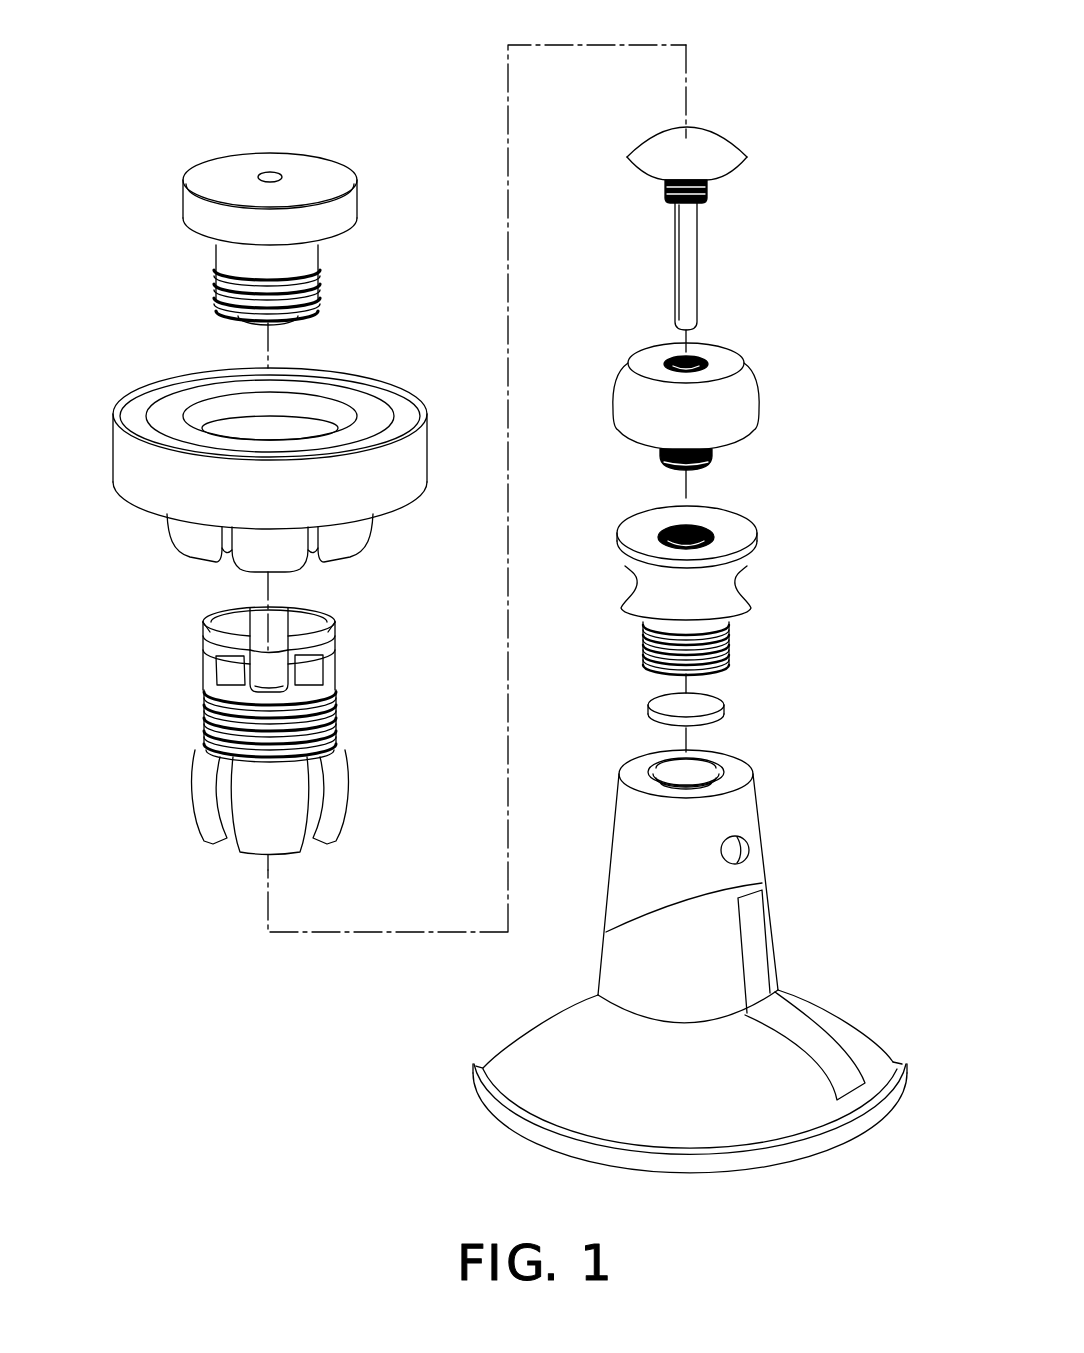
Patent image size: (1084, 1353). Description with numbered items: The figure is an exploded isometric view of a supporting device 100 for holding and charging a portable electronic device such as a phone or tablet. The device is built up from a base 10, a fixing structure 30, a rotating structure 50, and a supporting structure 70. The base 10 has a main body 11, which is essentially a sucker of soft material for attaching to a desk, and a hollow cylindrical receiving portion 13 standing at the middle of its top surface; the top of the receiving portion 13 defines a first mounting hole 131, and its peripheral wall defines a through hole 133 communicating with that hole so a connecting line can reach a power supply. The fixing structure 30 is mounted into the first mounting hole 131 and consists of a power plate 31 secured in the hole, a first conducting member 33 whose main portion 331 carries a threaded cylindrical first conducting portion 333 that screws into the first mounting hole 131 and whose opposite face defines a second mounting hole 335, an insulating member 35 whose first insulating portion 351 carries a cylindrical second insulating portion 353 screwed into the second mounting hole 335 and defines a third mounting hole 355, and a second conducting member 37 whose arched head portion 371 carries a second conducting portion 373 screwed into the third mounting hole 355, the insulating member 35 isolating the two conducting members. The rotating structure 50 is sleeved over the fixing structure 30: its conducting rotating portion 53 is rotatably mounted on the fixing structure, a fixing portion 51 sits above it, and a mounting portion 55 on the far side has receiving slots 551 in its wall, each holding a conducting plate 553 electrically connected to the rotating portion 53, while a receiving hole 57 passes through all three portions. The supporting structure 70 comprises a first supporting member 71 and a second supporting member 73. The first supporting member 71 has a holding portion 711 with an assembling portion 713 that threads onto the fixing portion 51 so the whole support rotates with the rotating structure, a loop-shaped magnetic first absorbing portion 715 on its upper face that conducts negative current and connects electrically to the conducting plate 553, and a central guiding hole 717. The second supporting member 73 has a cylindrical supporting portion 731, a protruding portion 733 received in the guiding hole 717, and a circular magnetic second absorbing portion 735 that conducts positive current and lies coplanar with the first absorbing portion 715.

The supporting device 100 is at (402, 40).
The base 10 is at (845, 887).
The main body 11 is at (810, 1002).
The receiving portion 13 is at (720, 950).
The first mounting hole 131 is at (725, 772).
The through hole 133 is at (750, 850).
The fixing structure 30 is at (874, 240).
The power plate 31 is at (700, 703).
The first conducting member 33 is at (765, 522).
The main portion 331 is at (730, 545).
The first conducting portion 333 is at (645, 640).
The second mounting hole 335 is at (700, 528).
The insulating member 35 is at (767, 386).
The first insulating portion 351 is at (640, 410).
The second insulating portion 353 is at (668, 462).
The third mounting hole 355 is at (670, 358).
The second conducting member 37 is at (707, 240).
The head portion 371 is at (718, 140).
The second conducting portion 373 is at (680, 238).
The rotating structure 50 is at (194, 731).
The fixing portion 51 is at (217, 692).
The rotating portion 53 is at (200, 810).
The mounting portion 55 is at (212, 650).
The receiving slot 551 is at (330, 651).
The conducting plate 553 is at (318, 672).
The receiving hole 57 is at (258, 625).
The supporting structure 70 is at (110, 252).
The first supporting member 71 is at (188, 366).
The holding portion 711 is at (398, 492).
The assembling portion 713 is at (345, 545).
The first absorbing portion 715 is at (360, 408).
The guiding hole 717 is at (285, 436).
The second supporting member 73 is at (198, 261).
The supporting portion 731 is at (334, 218).
The protruding portion 733 is at (305, 263).
The second absorbing portion 735 is at (323, 175).